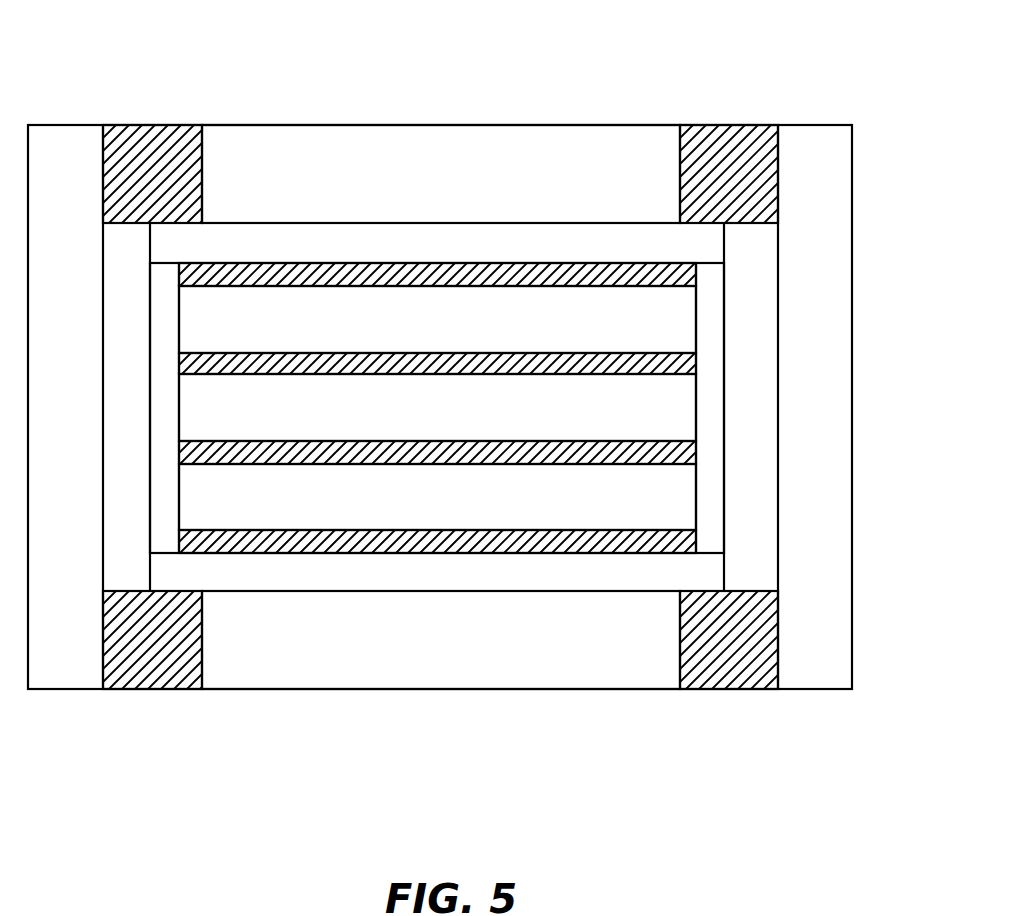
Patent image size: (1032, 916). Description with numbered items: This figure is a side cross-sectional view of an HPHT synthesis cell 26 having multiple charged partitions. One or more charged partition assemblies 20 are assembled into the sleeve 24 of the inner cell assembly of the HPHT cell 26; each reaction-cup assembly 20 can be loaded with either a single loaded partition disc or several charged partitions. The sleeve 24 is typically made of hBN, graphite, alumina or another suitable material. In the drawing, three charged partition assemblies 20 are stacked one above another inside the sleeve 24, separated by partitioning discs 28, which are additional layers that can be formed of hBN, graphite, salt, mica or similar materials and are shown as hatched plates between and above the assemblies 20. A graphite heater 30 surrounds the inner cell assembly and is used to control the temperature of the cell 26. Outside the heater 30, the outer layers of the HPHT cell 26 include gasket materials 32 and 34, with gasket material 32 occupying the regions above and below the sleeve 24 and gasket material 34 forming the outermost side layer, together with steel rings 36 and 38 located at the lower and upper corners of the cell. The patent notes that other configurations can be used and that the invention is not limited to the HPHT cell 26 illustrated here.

The charged partition assembly 20 is at (437, 408).
The sleeve 24 is at (713, 448).
The HPHT cell 26 is at (605, 78).
The partitioning disc 28 is at (672, 445).
The graphite heater 30 is at (130, 395).
The gasket material 32 is at (441, 407).
The gasket material 34 is at (822, 518).
The steel ring 36 is at (730, 675).
The steel ring 38 is at (737, 147).